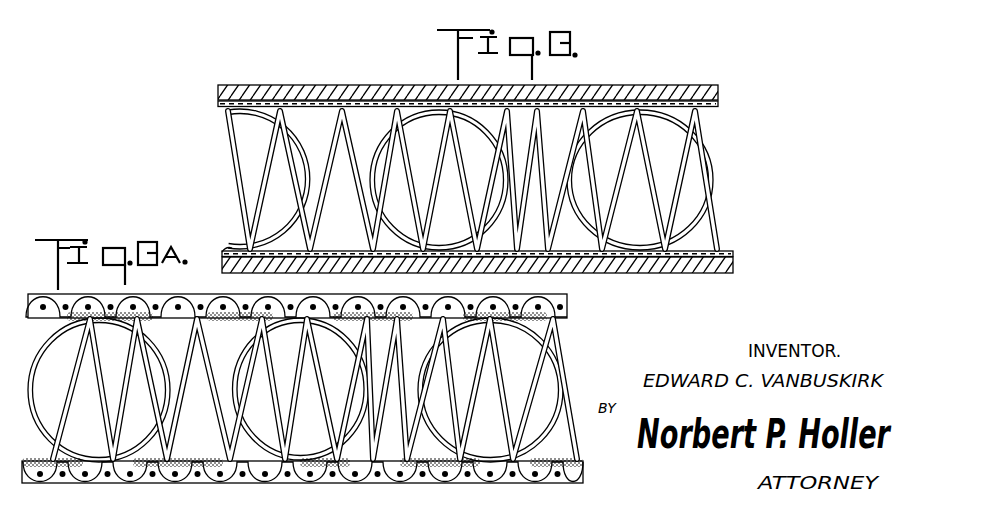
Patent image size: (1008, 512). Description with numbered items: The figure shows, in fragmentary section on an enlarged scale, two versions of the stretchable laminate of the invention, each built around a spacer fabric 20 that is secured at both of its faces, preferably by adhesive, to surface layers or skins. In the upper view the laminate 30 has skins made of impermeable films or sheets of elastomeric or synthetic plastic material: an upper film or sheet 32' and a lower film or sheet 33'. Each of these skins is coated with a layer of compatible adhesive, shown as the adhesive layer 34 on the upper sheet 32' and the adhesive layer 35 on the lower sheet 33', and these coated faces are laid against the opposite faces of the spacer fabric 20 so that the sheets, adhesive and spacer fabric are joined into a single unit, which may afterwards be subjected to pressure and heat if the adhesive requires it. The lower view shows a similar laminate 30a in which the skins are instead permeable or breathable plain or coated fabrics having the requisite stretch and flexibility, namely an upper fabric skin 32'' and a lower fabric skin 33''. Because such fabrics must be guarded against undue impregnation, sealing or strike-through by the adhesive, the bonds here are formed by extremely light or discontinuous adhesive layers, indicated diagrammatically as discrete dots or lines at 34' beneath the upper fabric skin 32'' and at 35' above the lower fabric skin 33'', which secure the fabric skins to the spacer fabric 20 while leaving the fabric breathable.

In FIG. 3, the laminate 30 is at (683, 56).
In FIG. 3, the impermeable film or sheet 32' is at (503, 80).
In FIG. 3, the adhesive layer 34 is at (502, 108).
In FIG. 3, the spacer fabric 20 is at (726, 181).
In FIG. 3A, the spacer fabric 20 is at (602, 367).
In FIG. 3, the adhesive layer 35 is at (507, 240).
In FIG. 3, the impermeable film or sheet 33' is at (514, 270).
In FIG. 3A, the laminate 30a is at (252, 286).
In FIG. 3A, the fabric skin 32'' is at (331, 308).
In FIG. 3A, the discontinuous adhesive layer 34' is at (307, 340).
In FIG. 3A, the discontinuous adhesive layer 35' is at (302, 445).
In FIG. 3A, the fabric skin 33'' is at (327, 473).